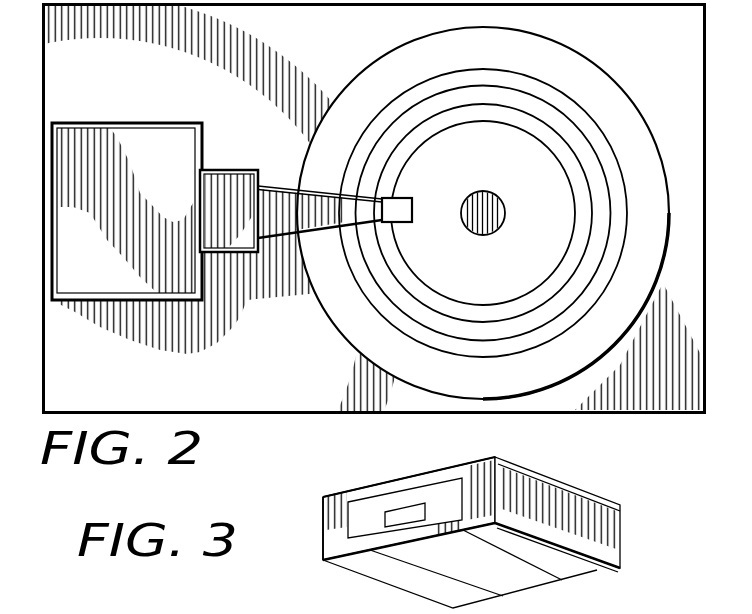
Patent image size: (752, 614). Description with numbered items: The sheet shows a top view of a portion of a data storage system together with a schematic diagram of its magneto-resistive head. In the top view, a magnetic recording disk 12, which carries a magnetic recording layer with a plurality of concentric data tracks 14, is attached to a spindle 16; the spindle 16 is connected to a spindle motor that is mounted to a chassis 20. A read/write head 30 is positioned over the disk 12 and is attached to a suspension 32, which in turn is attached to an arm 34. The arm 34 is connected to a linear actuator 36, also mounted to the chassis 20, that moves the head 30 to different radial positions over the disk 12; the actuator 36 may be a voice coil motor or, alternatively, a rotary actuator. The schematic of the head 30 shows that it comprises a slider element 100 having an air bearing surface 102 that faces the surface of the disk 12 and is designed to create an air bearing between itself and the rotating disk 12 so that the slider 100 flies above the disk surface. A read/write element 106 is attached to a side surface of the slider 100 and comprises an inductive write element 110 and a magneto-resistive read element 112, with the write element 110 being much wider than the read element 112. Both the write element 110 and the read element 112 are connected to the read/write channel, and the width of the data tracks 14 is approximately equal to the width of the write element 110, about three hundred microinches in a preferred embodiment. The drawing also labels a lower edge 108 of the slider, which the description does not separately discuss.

In FIG. 2, the magnetic recording disk 12 is at (362, 94).
In FIG. 2, the data tracks 14 is at (553, 147).
In FIG. 2, the spindle 16 is at (490, 200).
In FIG. 2, the chassis 20 is at (290, 390).
In FIG. 2, the read/write head 30 is at (407, 197).
In FIG. 3, the read/write head 30 is at (590, 501).
In FIG. 2, the suspension 32 is at (270, 224).
In FIG. 2, the arm 34 is at (239, 169).
In FIG. 2, the linear actuator 36 is at (174, 131).
In FIG. 3, the slider element 100 is at (621, 540).
In FIG. 3, the air bearing surface 102 is at (588, 565).
In FIG. 3, the read/write element 106 is at (357, 500).
In FIG. 3, the bottom edge 108 is at (330, 543).
In FIG. 3, the inductive write element 110 is at (437, 483).
In FIG. 3, the magneto-resistive read element 112 is at (400, 517).